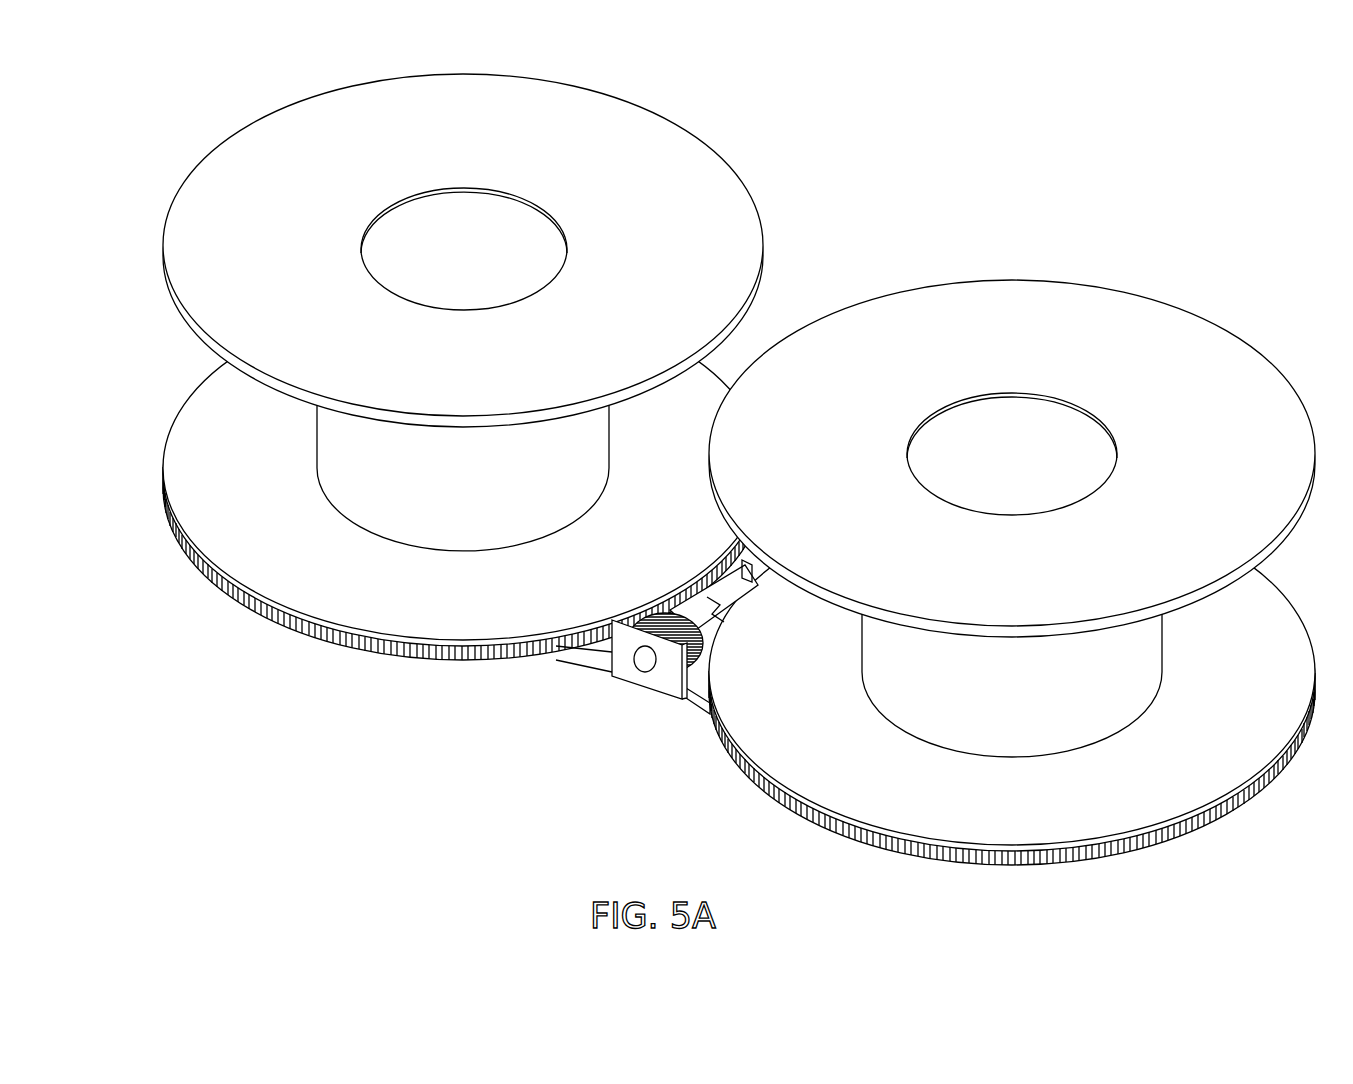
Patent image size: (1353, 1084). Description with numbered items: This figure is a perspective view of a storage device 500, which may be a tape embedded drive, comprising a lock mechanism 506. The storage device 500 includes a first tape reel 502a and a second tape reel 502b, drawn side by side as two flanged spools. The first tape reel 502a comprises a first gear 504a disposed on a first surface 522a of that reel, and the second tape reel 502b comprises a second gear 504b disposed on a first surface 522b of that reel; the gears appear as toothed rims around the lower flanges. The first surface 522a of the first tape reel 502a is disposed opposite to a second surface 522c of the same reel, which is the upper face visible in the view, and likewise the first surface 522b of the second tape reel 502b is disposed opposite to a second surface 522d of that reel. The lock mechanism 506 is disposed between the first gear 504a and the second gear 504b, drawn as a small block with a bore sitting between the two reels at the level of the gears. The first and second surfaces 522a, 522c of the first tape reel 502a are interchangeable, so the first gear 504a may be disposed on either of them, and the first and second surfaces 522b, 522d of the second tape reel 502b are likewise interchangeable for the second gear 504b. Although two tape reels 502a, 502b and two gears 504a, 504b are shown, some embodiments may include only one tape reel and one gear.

The storage device 500 is at (701, 500).
The first tape reel 502a is at (463, 410).
The second tape reel 502b is at (1012, 614).
The first gear 504a is at (468, 662).
The second gear 504b is at (1078, 864).
The lock mechanism 506 is at (641, 702).
The first surface of the first tape reel 522a is at (463, 521).
The first surface of the second tape reel 522b is at (1012, 724).
The second surface of the first tape reel 522c is at (656, 201).
The second surface of the second tape reel 522d is at (1239, 391).